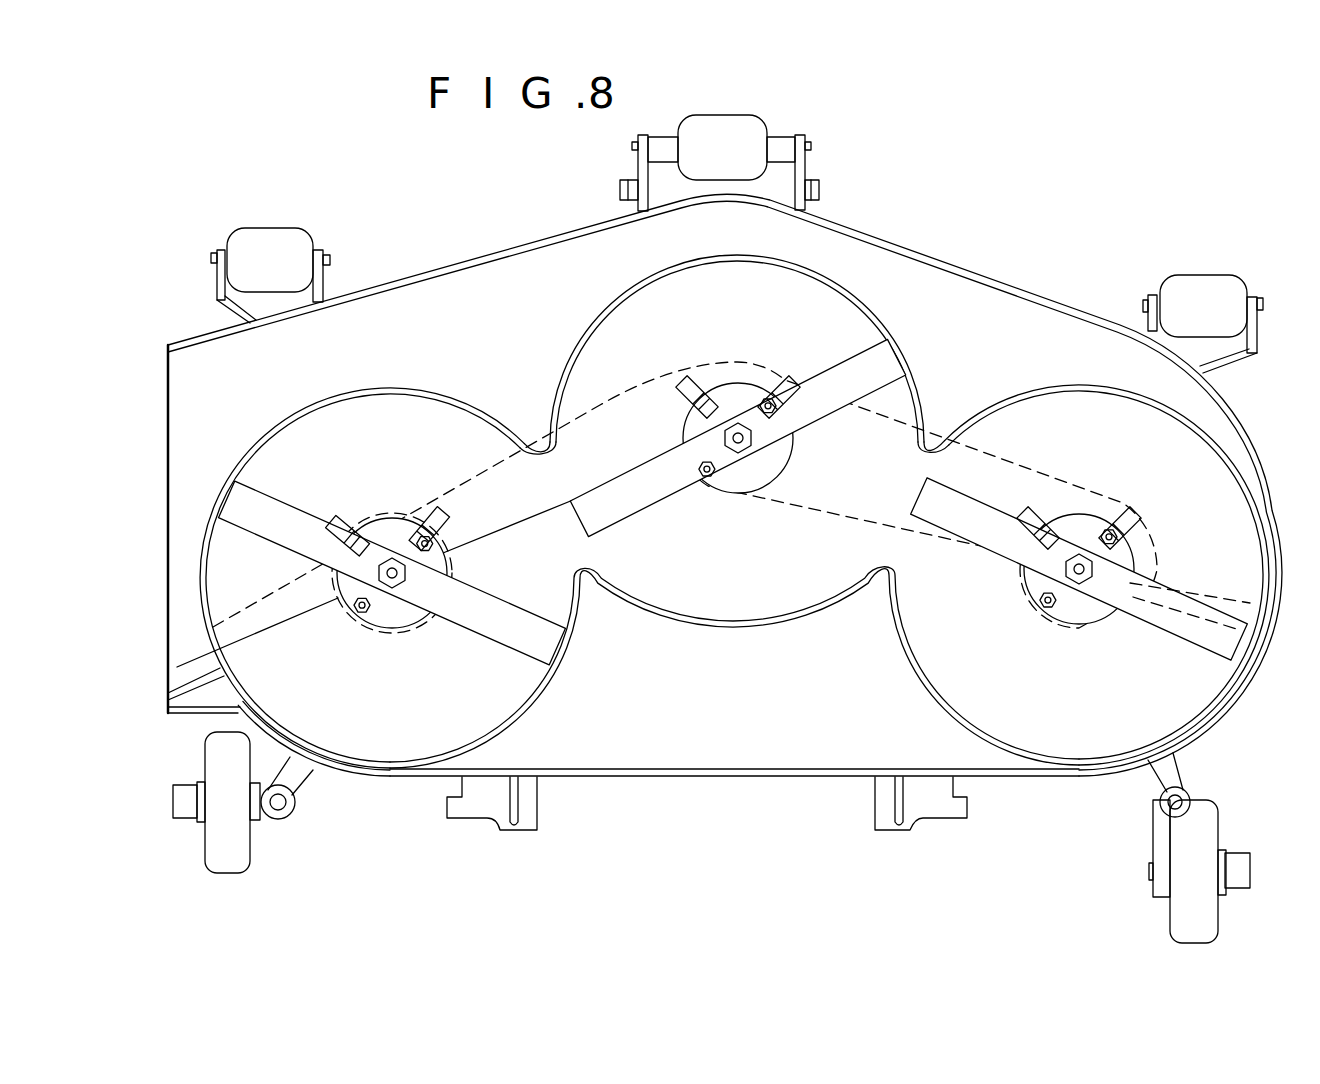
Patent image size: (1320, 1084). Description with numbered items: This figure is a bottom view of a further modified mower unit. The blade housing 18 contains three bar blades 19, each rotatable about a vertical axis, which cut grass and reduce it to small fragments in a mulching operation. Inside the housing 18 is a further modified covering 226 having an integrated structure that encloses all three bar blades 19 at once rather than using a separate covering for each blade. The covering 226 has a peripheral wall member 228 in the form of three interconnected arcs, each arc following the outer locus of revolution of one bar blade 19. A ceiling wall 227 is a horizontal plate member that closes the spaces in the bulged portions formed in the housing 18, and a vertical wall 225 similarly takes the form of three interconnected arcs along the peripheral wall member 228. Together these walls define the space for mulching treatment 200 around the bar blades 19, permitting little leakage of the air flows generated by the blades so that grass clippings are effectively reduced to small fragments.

The blade housing 18 is at (1032, 288).
The bar blade 19 is at (286, 506).
The space for mulching treatment 200 is at (1040, 683).
The vertical wall 225 is at (723, 632).
The covering 226 is at (848, 283).
The ceiling wall 227 is at (515, 502).
The peripheral wall member 228 is at (307, 400).